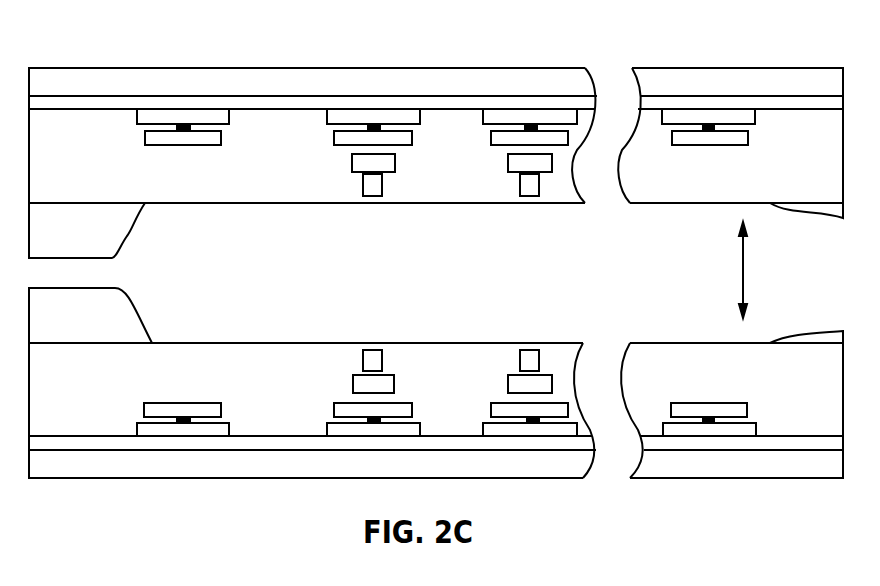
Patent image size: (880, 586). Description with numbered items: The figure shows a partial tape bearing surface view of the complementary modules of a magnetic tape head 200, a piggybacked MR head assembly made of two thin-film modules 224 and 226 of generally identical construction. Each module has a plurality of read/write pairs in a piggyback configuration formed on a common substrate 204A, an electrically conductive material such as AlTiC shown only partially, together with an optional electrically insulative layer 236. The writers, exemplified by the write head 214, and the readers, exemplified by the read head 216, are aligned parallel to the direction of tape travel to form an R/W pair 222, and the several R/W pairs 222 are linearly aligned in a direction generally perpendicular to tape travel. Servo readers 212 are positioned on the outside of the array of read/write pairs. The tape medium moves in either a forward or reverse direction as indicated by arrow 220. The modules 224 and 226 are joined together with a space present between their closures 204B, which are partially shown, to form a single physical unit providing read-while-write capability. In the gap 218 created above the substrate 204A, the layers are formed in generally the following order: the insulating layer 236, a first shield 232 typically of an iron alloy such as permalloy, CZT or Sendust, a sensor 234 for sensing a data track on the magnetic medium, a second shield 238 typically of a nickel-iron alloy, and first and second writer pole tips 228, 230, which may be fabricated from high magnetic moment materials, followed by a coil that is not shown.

The magnetic tape head 200 is at (366, 58).
The substrate 204A is at (163, 91).
The closures 204B is at (127, 236).
The servo readers 212 is at (223, 397).
The write head 214 is at (452, 383).
The read head 216 is at (470, 425).
The gap 218 is at (230, 203).
The arrow 220 is at (745, 277).
The R/W pair 222 is at (383, 326).
The thin-film module 224 is at (763, 68).
The thin-film module 226 is at (750, 478).
The first writer pole tip 228 is at (353, 385).
The second writer pole tip 230 is at (364, 355).
The first shield 232 is at (327, 430).
The sensor 234 is at (330, 418).
The insulating layer 236 is at (832, 428).
The second shield 238 is at (334, 410).